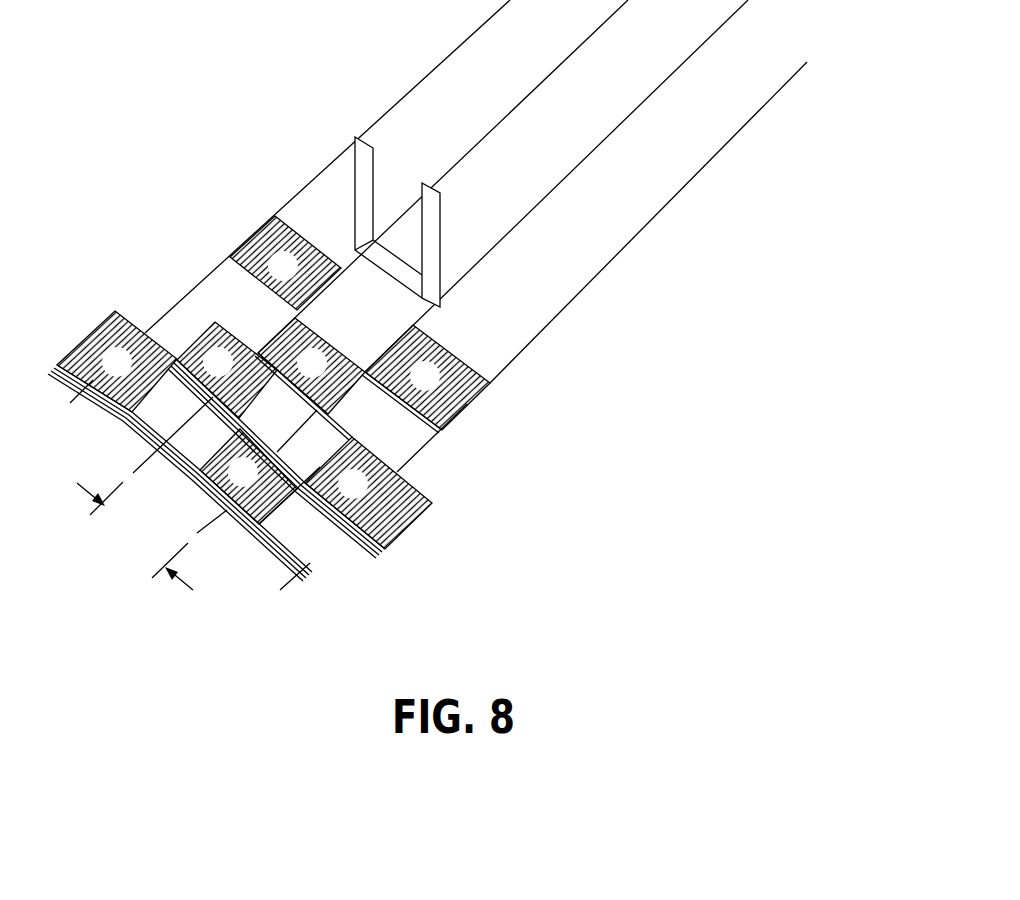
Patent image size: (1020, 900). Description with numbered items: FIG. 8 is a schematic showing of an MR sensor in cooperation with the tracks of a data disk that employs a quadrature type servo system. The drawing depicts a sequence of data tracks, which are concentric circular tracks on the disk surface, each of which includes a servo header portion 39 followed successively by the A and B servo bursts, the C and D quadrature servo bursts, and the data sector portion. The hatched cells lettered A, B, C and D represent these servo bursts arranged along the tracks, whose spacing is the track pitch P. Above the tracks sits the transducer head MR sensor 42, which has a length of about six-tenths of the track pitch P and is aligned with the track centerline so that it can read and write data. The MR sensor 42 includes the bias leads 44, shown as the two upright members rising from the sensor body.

The servo header portion 39 is at (290, 563).
The MR sensor 42 is at (422, 290).
The bias leads 44 is at (355, 168).